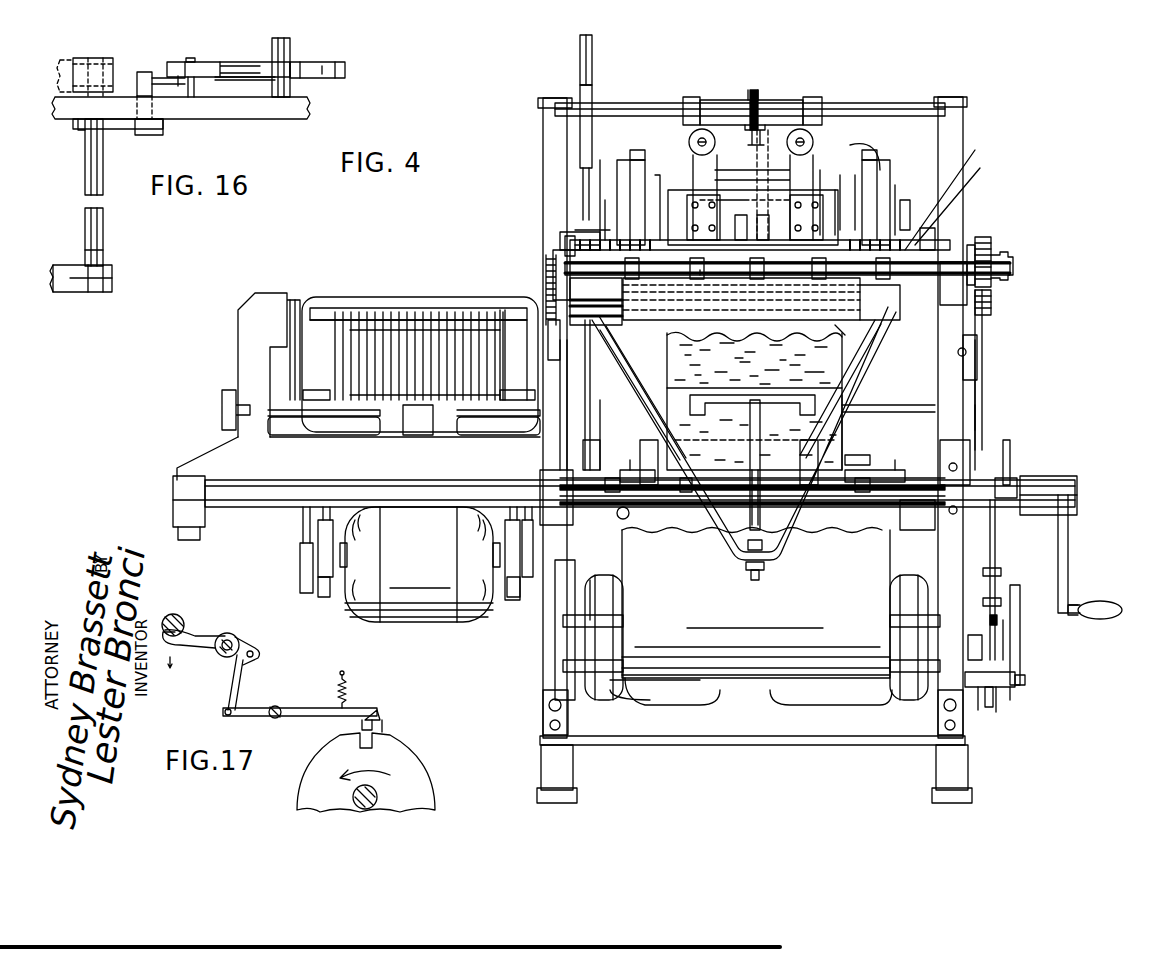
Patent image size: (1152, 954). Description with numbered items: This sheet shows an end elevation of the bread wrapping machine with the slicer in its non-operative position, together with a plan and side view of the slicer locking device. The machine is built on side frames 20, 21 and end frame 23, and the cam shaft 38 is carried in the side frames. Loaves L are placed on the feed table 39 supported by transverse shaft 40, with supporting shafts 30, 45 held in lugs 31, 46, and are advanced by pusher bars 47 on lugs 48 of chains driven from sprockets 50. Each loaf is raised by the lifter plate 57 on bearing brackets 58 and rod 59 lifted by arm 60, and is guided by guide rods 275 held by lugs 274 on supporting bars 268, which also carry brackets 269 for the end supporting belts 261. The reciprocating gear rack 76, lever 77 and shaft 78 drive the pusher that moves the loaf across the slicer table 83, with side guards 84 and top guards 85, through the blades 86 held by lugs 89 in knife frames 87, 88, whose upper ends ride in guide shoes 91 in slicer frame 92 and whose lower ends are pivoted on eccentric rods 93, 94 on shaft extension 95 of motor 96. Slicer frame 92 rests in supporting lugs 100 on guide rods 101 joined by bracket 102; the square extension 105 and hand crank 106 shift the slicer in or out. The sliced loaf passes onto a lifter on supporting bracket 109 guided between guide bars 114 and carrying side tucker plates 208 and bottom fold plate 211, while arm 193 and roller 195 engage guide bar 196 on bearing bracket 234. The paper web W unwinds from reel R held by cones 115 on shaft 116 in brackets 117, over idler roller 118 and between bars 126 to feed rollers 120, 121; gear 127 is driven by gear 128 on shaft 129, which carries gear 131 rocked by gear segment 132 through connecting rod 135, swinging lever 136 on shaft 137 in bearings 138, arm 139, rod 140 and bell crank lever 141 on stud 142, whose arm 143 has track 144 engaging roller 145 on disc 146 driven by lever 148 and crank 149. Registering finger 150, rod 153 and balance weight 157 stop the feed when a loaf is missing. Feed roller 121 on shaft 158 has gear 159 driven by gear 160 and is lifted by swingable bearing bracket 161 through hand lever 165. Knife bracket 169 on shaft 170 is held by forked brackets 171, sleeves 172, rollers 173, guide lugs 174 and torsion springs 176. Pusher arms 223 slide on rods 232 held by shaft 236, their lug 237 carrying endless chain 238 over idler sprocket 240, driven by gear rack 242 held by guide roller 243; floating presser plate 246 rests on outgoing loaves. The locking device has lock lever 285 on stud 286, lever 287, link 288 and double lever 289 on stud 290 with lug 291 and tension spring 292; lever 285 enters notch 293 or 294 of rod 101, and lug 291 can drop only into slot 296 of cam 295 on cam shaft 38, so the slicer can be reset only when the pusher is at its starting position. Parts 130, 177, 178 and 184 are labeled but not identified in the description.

In FIG. 16, the side frame 20 is at (275, 108).
In FIG. 4, the side frame 20 is at (975, 775).
In FIG. 4, the side frame 21 is at (580, 775).
In FIG. 4, the end frame 23 is at (725, 736).
In FIG. 4, the longitudinal supporting shaft 30 is at (895, 500).
In FIG. 4, the lug 31 is at (880, 480).
In FIG. 16, the cam shaft 38 is at (290, 42).
In FIG. 17, the cam shaft 38 is at (377, 795).
In FIG. 4, the feed table 39 is at (815, 510).
In FIG. 4, the transverse shaft 40 is at (686, 492).
In FIG. 4, the supporting shaft 45 is at (640, 530).
In FIG. 4, the lug 46 is at (626, 518).
In FIG. 4, the pusher bars 47 is at (870, 460).
In FIG. 4, the lugs 48 is at (771, 466).
In FIG. 4, the sprockets 50 is at (850, 515).
In FIG. 4, the lifter plate 57 is at (905, 400).
In FIG. 4, the bearing brackets 58 is at (860, 430).
In FIG. 4, the rod 59 is at (870, 432).
In FIG. 4, the arm 60 is at (758, 510).
In FIG. 4, the reciprocating gear rack 76 is at (590, 440).
In FIG. 4, the lever 77 is at (605, 695).
In FIG. 4, the shaft 78 is at (625, 685).
In FIG. 4, the slicer table 83 is at (330, 405).
In FIG. 4, the side guards 84 is at (485, 440).
In FIG. 4, the top guards 85 is at (355, 297).
In FIG. 4, the knife blades 86 is at (412, 445).
In FIG. 4, the knife frame 87 is at (325, 308).
In FIG. 4, the knife frame 88 is at (365, 310).
In FIG. 4, the lugs 89 is at (400, 312).
In FIG. 4, the guide shoes 91 is at (490, 290).
In FIG. 4, the slicer frame 92 is at (553, 515).
In FIG. 4, the eccentric rod 93 is at (520, 612).
In FIG. 4, the eccentric rod 94 is at (512, 605).
In FIG. 4, the shaft extension 95 is at (470, 615).
In FIG. 4, the motor 96 is at (410, 622).
In FIG. 16, the supporting lugs 100 is at (70, 65).
In FIG. 4, the supporting lugs 100 is at (612, 515).
In FIG. 16, the guide rods 101 is at (103, 218).
In FIG. 4, the guide rods 101 is at (690, 538).
In FIG. 17, the guide rods 101 is at (176, 614).
In FIG. 16, the bracket 102 is at (112, 287).
In FIG. 4, the bracket 102 is at (1020, 515).
In FIG. 4, the square extension 105 is at (1077, 500).
In FIG. 4, the hand crank 106 is at (1100, 619).
In FIG. 4, the supporting bracket 109 is at (770, 555).
In FIG. 4, the guide bars 114 is at (1000, 395).
In FIG. 4, the cones 115 is at (890, 660).
In FIG. 4, the shaft 116 is at (751, 648).
In FIG. 4, the brackets 117 is at (915, 600).
In FIG. 4, the idler roller 118 is at (548, 300).
In FIG. 4, the feed roller 120 is at (590, 345).
In FIG. 4, the feed roller 121 is at (697, 280).
In FIG. 4, the bars 126 is at (910, 560).
In FIG. 4, the gear 127 is at (990, 300).
In FIG. 4, the gear 128 is at (991, 240).
In FIG. 4, the shaft 129 is at (1013, 265).
In FIG. 4, the rod 130 is at (757, 190).
In FIG. 4, the gear 131 is at (960, 245).
In FIG. 4, the rocking gear segment 132 is at (991, 290).
In FIG. 4, the connecting rod 135 is at (982, 330).
In FIG. 4, the swinging lever 136 is at (970, 455).
In FIG. 4, the shaft 137 is at (845, 540).
In FIG. 4, the bearings 138 is at (530, 475).
In FIG. 4, the arm 139 is at (995, 545).
In FIG. 4, the rod 140 is at (1001, 572).
In FIG. 4, the bell crank lever 141 is at (1001, 602).
In FIG. 4, the stud 142 is at (1025, 680).
In FIG. 4, the arm 143 is at (1012, 695).
In FIG. 4, the longitudinal track 144 is at (1020, 590).
In FIG. 4, the roller 145 is at (1005, 640).
In FIG. 4, the disc 146 is at (993, 700).
In FIG. 4, the lever 148 is at (980, 710).
In FIG. 4, the crank 149 is at (998, 710).
In FIG. 4, the registering finger 150 is at (760, 440).
In FIG. 4, the rod 153 is at (997, 620).
In FIG. 4, the balance weight 157 is at (1003, 660).
In FIG. 4, the shaft 158 is at (815, 280).
In FIG. 4, the gear 159 is at (560, 245).
In FIG. 4, the gear 160 is at (553, 270).
In FIG. 4, the swingable bearing bracket 161 is at (935, 238).
In FIG. 4, the hand lever 165 is at (966, 352).
In FIG. 4, the knife bracket 169 is at (954, 190).
In FIG. 4, the shaft 170 is at (845, 340).
In FIG. 4, the forked brackets 171 is at (1020, 190).
In FIG. 4, the sleeves 172 is at (960, 198).
In FIG. 4, the rollers 173 is at (1015, 208).
In FIG. 4, the guide lugs 174 is at (580, 232).
In FIG. 4, the torsion springs 176 is at (850, 250).
In FIG. 4, the rod 177 is at (620, 395).
In FIG. 4, the block 178 is at (530, 458).
In FIG. 4, the rod 184 is at (1010, 450).
In FIG. 4, the arm 193 is at (733, 228).
In FIG. 4, the roller 195 is at (776, 228).
In FIG. 4, the guide bar 196 is at (751, 112).
In FIG. 4, the side tucker plates 208 is at (830, 199).
In FIG. 4, the bottom fold plate 211 is at (687, 200).
In FIG. 4, the pusher arms 223 is at (850, 135).
In FIG. 4, the rods 232 is at (850, 90).
In FIG. 4, the bearing bracket 234 is at (835, 70).
In FIG. 4, the shaft 236 is at (640, 103).
In FIG. 4, the lug 237 is at (760, 140).
In FIG. 4, the endless chain 238 is at (758, 95).
In FIG. 4, the idler sprocket 240 is at (753, 90).
In FIG. 4, the gear rack 242 is at (592, 50).
In FIG. 4, the guide roller 243 is at (592, 95).
In FIG. 4, the floating presser plate 246 is at (855, 180).
In FIG. 4, the end supporting belts 261 is at (897, 190).
In FIG. 4, the supporting bars 268 is at (900, 180).
In FIG. 4, the brackets 269 is at (880, 160).
In FIG. 4, the lugs 274 is at (917, 210).
In FIG. 4, the guide rods 275 is at (880, 380).
In FIG. 16, the lock lever 285 is at (125, 129).
In FIG. 17, the lock lever 285 is at (200, 648).
In FIG. 16, the stud 286 is at (155, 135).
In FIG. 17, the stud 286 is at (237, 638).
In FIG. 16, the lever 287 is at (142, 72).
In FIG. 17, the lever 287 is at (258, 650).
In FIG. 16, the link 288 is at (163, 107).
In FIG. 17, the link 288 is at (228, 690).
In FIG. 16, the double lever 289 is at (215, 62).
In FIG. 17, the double lever 289 is at (375, 700).
In FIG. 16, the stud 290 is at (190, 58).
In FIG. 17, the stud 290 is at (275, 706).
In FIG. 17, the lug 291 is at (382, 726).
In FIG. 17, the tension spring 292 is at (346, 680).
In FIG. 16, the notch 293 is at (85, 128).
In FIG. 17, the notch 293 is at (200, 623).
In FIG. 16, the notch 294 is at (103, 250).
In FIG. 16, the cam 295 is at (345, 70).
In FIG. 17, the cam 295 is at (430, 790).
In FIG. 16, the slot 296 is at (245, 86).
In FIG. 17, the slot 296 is at (355, 761).
In FIG. 4, the loaves L is at (744, 433).
In FIG. 4, the paper web W is at (754, 355).
In FIG. 4, the reel R is at (757, 617).